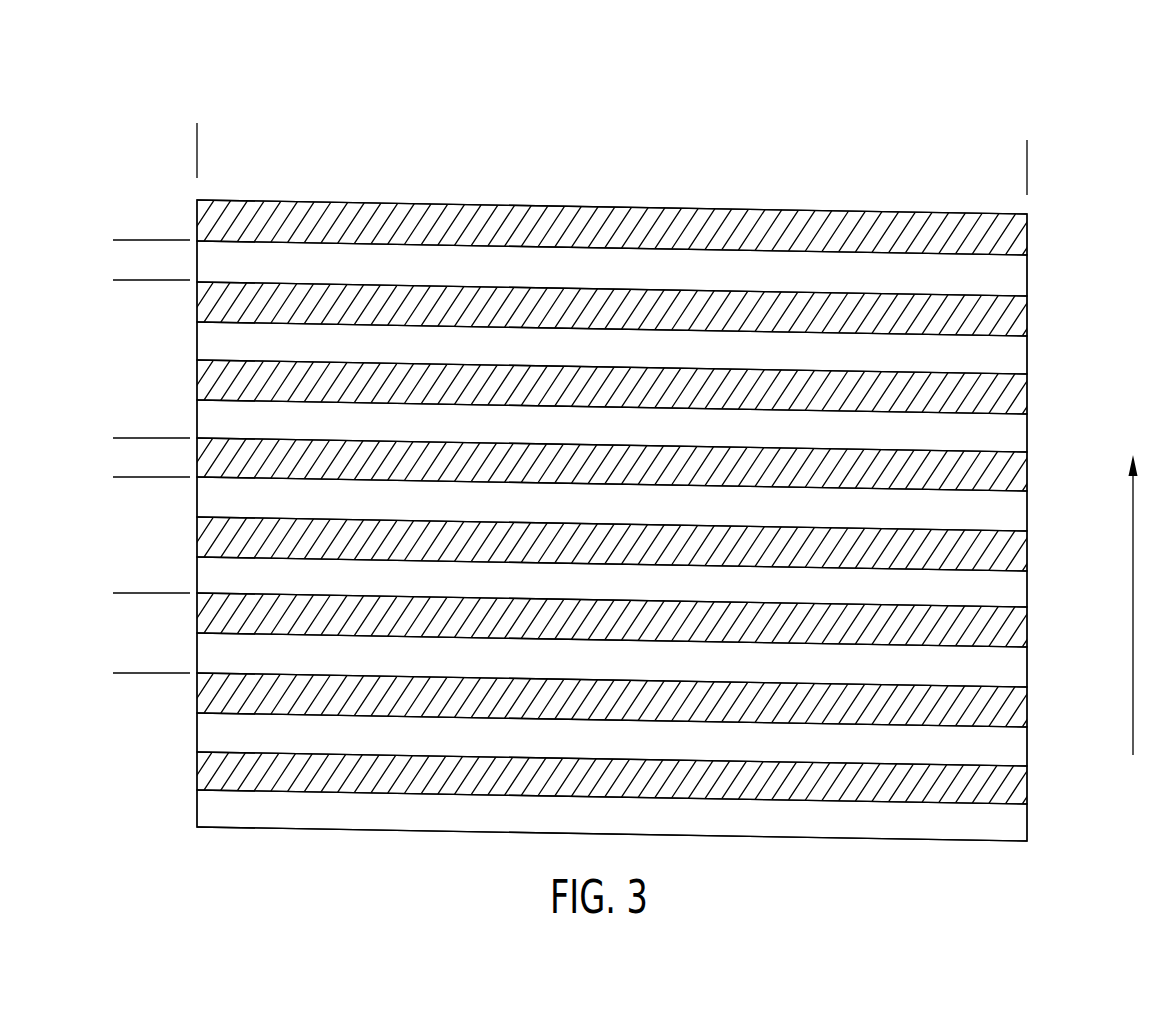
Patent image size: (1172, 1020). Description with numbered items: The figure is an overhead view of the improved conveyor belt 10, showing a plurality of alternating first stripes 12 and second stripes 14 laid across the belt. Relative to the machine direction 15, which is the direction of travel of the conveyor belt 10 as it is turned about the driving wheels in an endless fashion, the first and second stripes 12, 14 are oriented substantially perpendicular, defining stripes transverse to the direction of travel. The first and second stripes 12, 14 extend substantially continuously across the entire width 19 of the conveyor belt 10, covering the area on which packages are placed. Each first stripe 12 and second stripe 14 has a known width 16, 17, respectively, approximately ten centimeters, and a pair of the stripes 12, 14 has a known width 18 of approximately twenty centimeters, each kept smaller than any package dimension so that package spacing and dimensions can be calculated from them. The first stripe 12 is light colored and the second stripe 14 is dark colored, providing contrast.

The improved conveyor belt 10 is at (149, 149).
The first stripe 12 is at (1007, 279).
The second stripe 14 is at (1007, 243).
The machine direction 15 is at (1134, 588).
The width of first stripe 16 is at (135, 197).
The width of second stripe 17 is at (135, 398).
The width of a pair of stripes 18 is at (135, 558).
The entire width of the conveyor belt 19 is at (1012, 168).